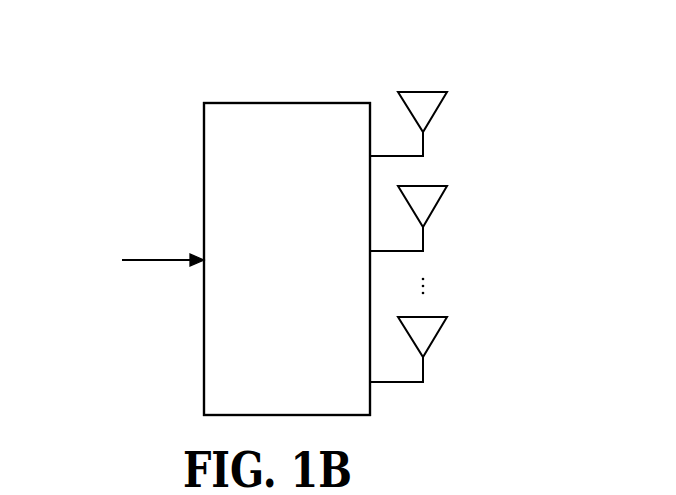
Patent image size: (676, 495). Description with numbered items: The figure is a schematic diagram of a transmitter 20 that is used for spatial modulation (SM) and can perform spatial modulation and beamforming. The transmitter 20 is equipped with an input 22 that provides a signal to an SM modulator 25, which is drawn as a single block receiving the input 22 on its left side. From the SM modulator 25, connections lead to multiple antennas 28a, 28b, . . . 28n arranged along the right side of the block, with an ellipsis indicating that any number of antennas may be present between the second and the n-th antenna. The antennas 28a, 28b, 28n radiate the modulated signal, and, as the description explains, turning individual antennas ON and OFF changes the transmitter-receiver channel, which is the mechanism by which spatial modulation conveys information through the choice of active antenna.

The transmitter 20 is at (110, 151).
The input 22 is at (140, 261).
The SM modulator 25 is at (271, 303).
The antenna 28a is at (441, 101).
The antenna 28b is at (441, 196).
The antenna 28n is at (441, 327).